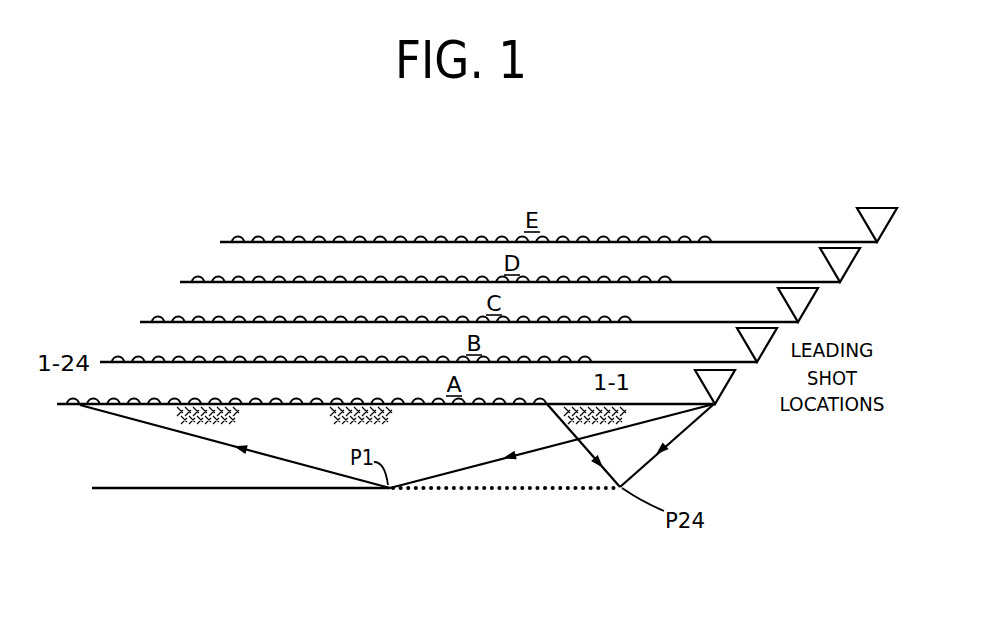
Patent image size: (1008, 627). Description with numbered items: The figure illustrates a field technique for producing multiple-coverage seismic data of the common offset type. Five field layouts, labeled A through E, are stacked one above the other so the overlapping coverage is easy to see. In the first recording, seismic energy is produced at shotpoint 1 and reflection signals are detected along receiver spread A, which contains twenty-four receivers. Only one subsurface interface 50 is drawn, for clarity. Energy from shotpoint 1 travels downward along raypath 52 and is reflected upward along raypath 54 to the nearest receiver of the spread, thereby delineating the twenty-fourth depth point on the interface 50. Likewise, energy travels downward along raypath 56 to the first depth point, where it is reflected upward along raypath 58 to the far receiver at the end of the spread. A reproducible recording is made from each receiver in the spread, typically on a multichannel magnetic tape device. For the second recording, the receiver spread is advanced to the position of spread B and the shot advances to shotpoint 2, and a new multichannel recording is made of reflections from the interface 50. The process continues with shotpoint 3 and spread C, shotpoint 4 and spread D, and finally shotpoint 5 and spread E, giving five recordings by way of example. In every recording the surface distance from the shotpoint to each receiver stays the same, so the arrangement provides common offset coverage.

The shotpoint 1 is at (715, 387).
The shotpoint 2 is at (757, 345).
The shotpoint 3 is at (798, 305).
The shotpoint 4 is at (840, 265).
The shotpoint 5 is at (877, 225).
The subsurface interface 50 is at (566, 477).
The raypath 52 is at (687, 427).
The raypath 54 is at (607, 474).
The raypath 56 is at (478, 462).
The raypath 58 is at (256, 453).